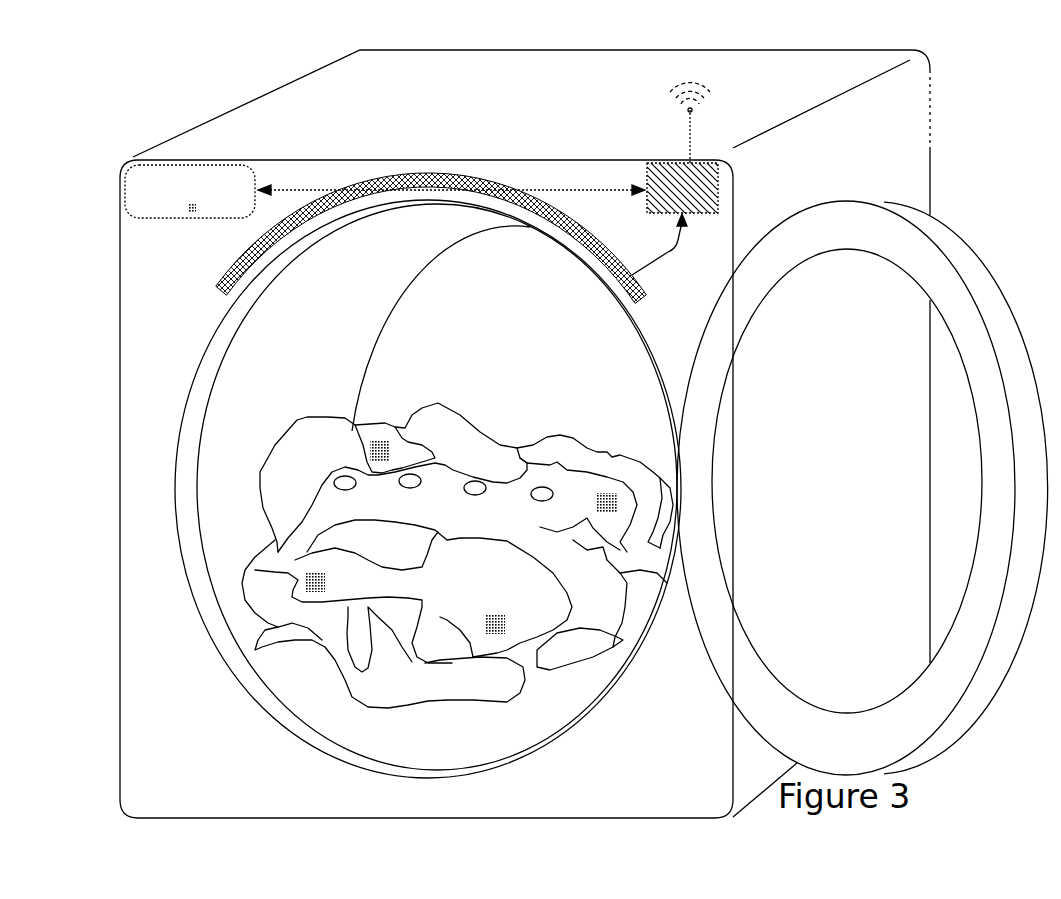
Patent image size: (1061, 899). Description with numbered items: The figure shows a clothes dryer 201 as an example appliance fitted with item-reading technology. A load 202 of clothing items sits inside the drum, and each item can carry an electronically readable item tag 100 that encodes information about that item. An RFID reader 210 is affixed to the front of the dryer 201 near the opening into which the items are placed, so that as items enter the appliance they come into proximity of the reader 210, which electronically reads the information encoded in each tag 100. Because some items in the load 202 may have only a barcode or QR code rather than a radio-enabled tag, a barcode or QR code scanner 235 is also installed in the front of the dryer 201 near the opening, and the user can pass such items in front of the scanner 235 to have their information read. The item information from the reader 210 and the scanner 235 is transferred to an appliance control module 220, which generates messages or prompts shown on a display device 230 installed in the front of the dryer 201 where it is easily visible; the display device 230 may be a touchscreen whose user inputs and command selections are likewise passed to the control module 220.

The clothes dryer 201 is at (522, 47).
The load 202 is at (497, 432).
The electronically readable item tag 100 is at (380, 430).
The RFID reader 210 is at (640, 296).
The appliance control module 220 is at (702, 160).
The display device 230 is at (235, 162).
The barcode or QR code scanner 235 is at (193, 208).